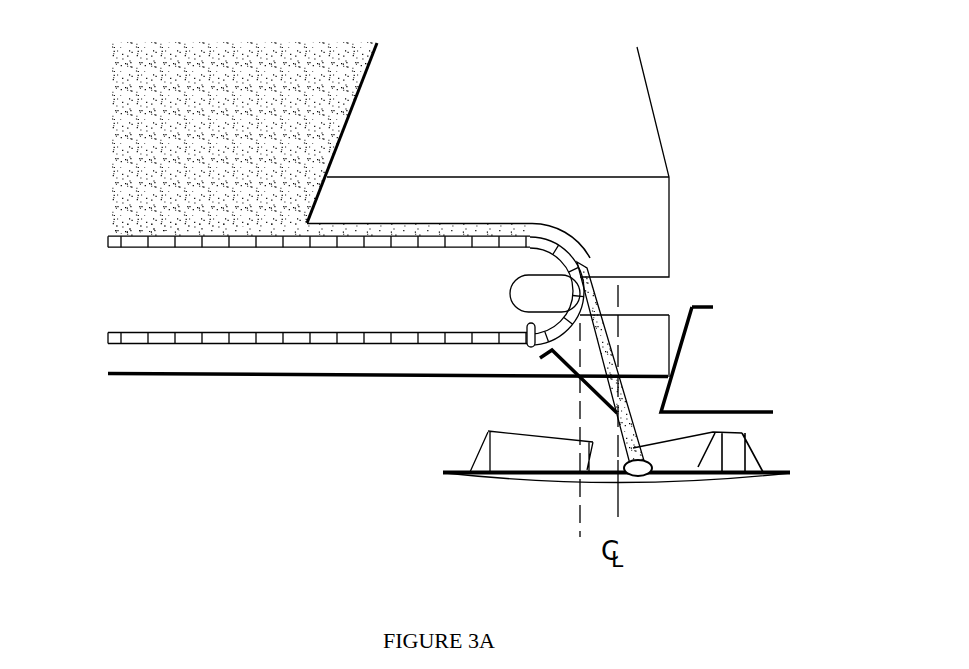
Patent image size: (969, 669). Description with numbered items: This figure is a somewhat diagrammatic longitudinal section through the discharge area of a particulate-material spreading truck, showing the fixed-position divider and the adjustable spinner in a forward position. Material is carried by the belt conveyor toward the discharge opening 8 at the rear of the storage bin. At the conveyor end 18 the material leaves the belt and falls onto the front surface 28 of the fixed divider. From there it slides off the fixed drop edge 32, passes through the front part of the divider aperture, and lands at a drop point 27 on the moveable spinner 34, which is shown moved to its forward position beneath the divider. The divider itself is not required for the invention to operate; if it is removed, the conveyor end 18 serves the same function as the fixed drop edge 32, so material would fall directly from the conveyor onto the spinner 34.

The discharge opening 8 is at (313, 215).
The conveyor end 18 is at (577, 532).
The drop point 27 is at (640, 476).
The front surface 28 is at (577, 372).
The fixed drop edge 32 is at (617, 415).
The moveable spinner 34 is at (663, 478).